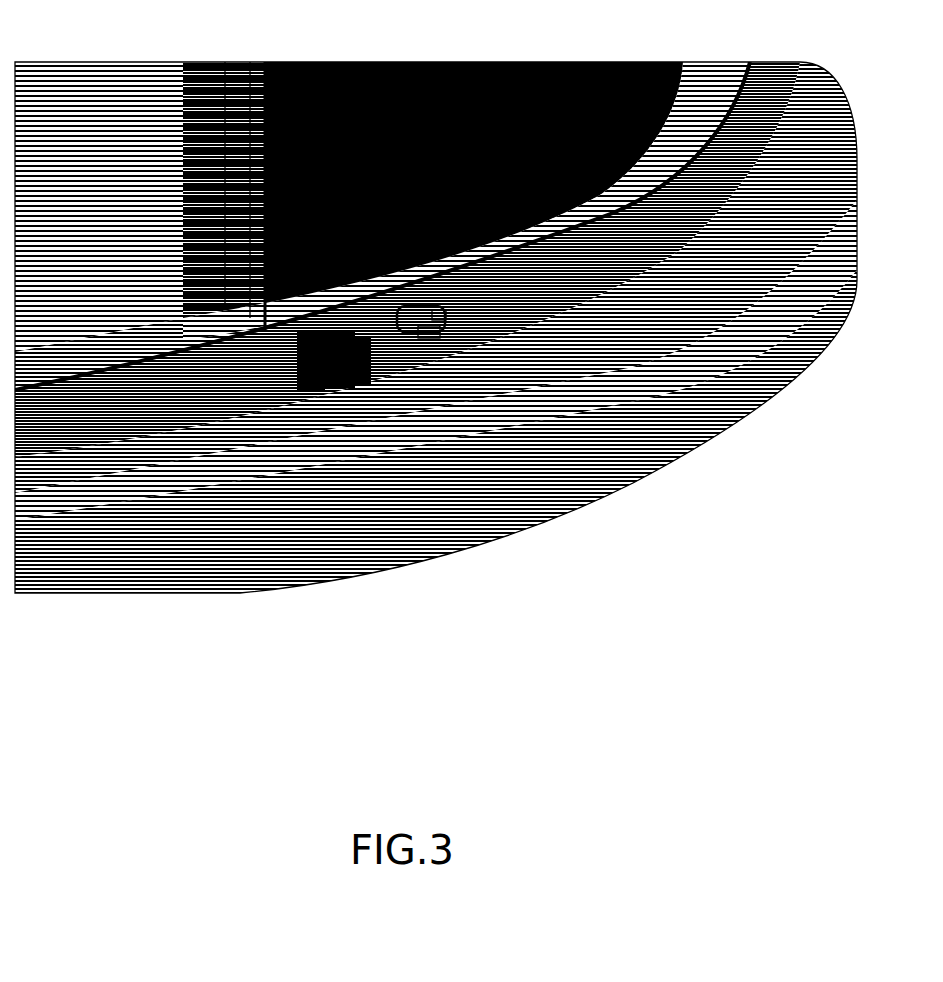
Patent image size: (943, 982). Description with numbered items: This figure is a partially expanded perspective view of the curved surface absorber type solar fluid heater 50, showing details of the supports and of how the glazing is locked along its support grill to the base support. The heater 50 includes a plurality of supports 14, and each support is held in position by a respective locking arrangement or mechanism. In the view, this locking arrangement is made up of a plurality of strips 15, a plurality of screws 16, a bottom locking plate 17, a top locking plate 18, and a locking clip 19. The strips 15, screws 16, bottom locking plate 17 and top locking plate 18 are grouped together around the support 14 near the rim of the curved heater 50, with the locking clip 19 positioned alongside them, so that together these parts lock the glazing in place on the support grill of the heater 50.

The curved surface absorber type solar fluid heater 50 is at (437, 299).
The supports 14 is at (370, 378).
The strips 15 is at (325, 363).
The screws 16 is at (345, 357).
The bottom locking plate 17 is at (430, 336).
The top locking plate 18 is at (437, 313).
The locking clip 19 is at (455, 313).